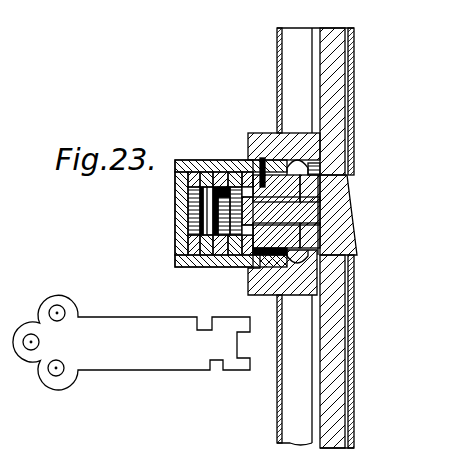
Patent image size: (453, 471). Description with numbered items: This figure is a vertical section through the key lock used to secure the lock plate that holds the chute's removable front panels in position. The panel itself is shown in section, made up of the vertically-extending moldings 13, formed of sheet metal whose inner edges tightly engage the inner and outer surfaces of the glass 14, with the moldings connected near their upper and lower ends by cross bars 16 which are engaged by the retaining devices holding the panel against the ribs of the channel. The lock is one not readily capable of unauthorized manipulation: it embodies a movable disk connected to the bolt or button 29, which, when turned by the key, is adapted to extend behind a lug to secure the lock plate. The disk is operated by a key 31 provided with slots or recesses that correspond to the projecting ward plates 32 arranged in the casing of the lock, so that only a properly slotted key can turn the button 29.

The vertically-extending moldings 13 is at (277, 87).
The glass 14 is at (330, 103).
The cross bars 16 is at (262, 134).
The bolt or button 29 is at (312, 188).
The key 31 is at (131, 342).
The ward plates 32 is at (176, 221).